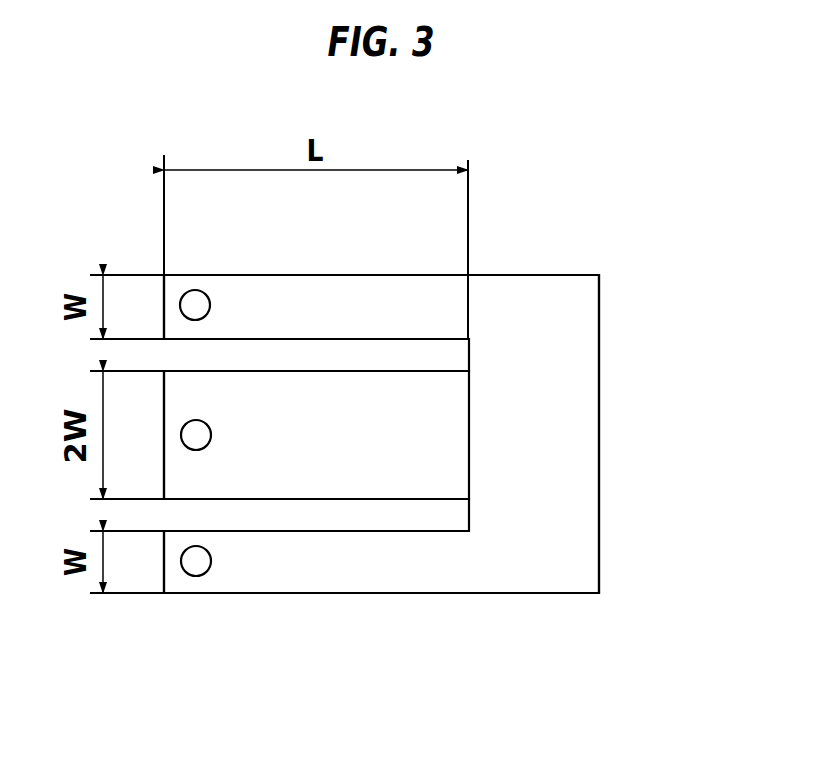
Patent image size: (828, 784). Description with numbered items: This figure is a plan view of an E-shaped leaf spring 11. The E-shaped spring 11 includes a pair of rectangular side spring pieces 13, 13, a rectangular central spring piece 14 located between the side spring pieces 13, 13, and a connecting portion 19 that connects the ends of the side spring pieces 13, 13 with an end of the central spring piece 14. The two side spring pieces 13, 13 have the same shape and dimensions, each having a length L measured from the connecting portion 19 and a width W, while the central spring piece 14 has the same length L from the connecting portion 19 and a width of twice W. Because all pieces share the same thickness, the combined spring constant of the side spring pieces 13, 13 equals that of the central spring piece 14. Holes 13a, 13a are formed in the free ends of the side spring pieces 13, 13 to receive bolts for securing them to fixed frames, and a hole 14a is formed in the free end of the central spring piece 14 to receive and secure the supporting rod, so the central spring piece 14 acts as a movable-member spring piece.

The E-shaped spring 11 is at (527, 275).
The side spring piece 13 is at (287, 300).
The hole 13a is at (194, 302).
The central spring piece 14 is at (347, 452).
The hole 14a is at (202, 438).
The connecting portion 19 is at (567, 387).